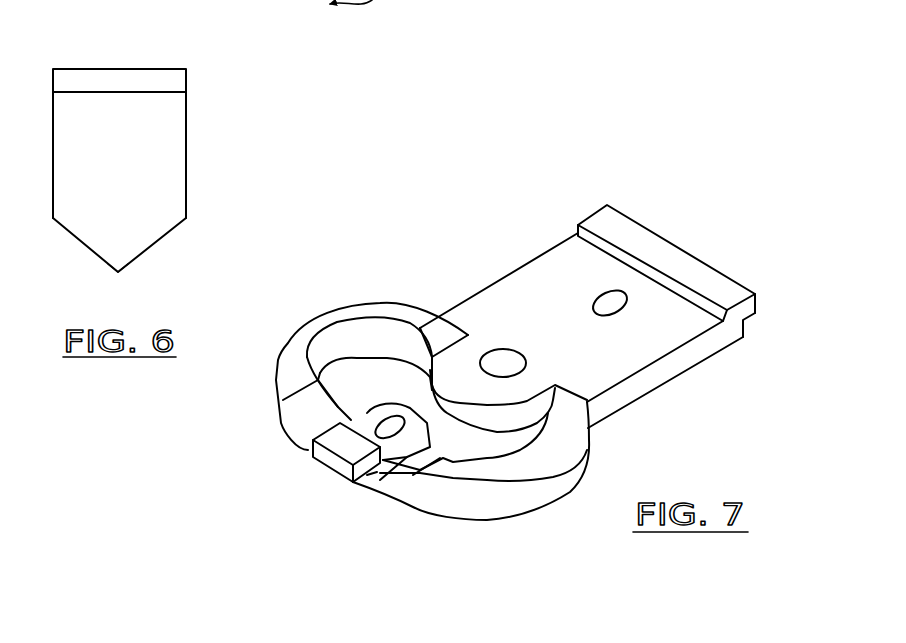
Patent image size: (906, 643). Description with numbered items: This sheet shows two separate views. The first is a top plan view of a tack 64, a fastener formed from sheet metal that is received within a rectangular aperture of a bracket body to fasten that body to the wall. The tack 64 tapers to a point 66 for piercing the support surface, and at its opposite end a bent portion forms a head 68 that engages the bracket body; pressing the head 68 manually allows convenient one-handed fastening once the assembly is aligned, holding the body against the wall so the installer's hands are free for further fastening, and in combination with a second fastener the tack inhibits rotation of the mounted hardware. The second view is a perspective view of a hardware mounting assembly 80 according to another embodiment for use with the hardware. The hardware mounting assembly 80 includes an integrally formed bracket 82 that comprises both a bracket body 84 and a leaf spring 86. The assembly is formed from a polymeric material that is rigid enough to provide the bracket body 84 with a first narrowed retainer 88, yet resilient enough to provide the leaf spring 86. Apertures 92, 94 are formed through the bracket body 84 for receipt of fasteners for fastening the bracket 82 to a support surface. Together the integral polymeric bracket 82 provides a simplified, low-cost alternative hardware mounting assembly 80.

In FIG. 6, the tack 64 is at (192, 103).
In FIG. 6, the point 66 is at (117, 274).
In FIG. 6, the head 68 is at (93, 68).
In FIG. 7, the hardware mounting assembly 80 is at (465, 228).
In FIG. 7, the bracket 82 is at (665, 390).
In FIG. 7, the bracket body 84 is at (708, 360).
In FIG. 7, the leaf spring 86 is at (488, 503).
In FIG. 7, the first narrowed retainer 88 is at (688, 252).
In FIG. 7, the aperture 92 is at (598, 292).
In FIG. 7, the aperture 94 is at (488, 350).